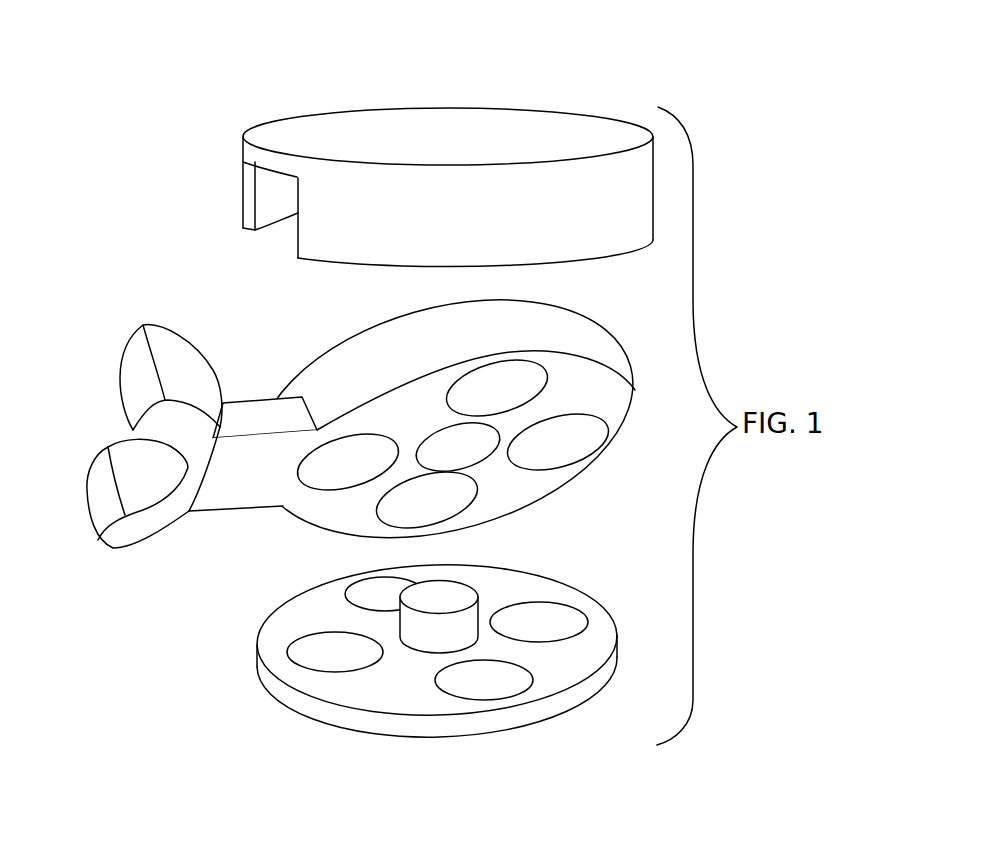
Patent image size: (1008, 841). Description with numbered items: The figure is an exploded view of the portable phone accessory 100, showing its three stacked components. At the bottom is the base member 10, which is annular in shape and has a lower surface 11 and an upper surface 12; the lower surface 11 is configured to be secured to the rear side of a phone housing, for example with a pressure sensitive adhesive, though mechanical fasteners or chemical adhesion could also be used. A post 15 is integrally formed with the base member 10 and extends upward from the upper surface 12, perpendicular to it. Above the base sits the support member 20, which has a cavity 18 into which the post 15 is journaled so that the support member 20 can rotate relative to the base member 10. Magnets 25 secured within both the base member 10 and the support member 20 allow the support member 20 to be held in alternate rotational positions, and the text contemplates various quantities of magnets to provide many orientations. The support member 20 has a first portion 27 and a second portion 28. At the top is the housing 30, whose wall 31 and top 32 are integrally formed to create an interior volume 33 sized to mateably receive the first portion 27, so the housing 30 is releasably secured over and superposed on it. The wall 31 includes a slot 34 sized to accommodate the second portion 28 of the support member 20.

The portable phone accessory 100 is at (755, 102).
The base member 10 is at (580, 650).
The lower surface 11 is at (473, 738).
The upper surface 12 is at (487, 592).
The post 15 is at (412, 625).
The cavity 18 is at (480, 438).
The support member 20 is at (297, 355).
The magnets 25 is at (580, 440).
The first portion 27 is at (370, 357).
The second portion 28 is at (210, 490).
The housing 30 is at (509, 195).
The wall 31 is at (622, 222).
The top 32 is at (580, 128).
The interior volume 33 is at (277, 195).
The slot 34 is at (284, 177).